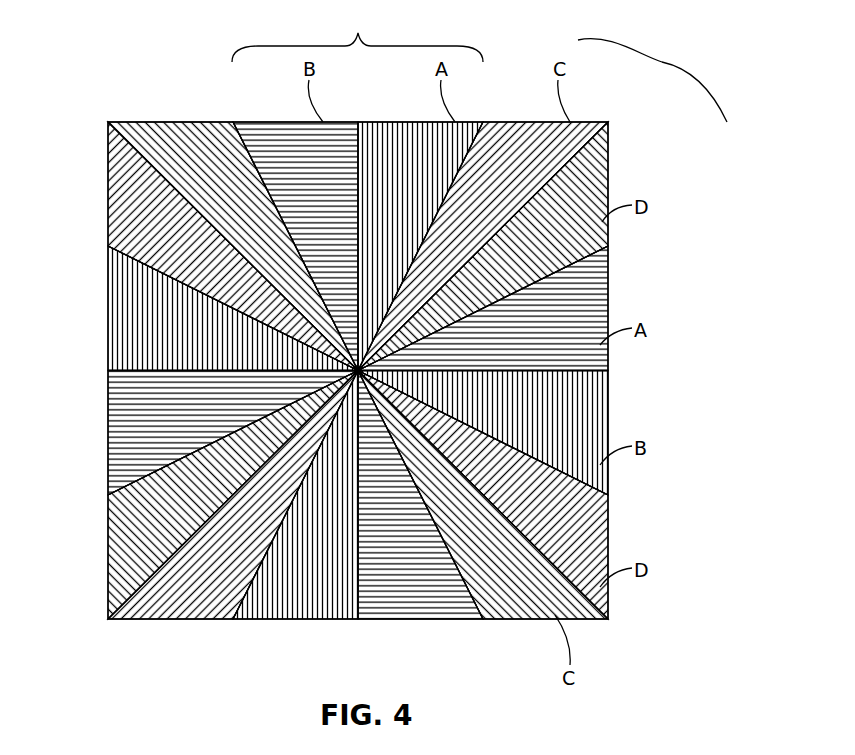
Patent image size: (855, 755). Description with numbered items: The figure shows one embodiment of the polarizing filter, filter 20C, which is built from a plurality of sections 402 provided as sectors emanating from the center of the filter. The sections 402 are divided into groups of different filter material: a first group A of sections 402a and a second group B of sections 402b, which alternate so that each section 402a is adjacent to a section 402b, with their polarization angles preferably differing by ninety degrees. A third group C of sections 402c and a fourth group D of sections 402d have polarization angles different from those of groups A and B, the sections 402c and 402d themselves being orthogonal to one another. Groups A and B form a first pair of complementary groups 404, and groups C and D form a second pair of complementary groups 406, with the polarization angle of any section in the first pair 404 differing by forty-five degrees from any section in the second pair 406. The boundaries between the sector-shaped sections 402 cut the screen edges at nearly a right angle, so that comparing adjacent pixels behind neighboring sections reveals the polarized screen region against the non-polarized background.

The section 402 is at (598, 432).
The section of group A 402a is at (435, 122).
The section of group B 402b is at (293, 122).
The section of group C 402c is at (187, 122).
The section of group D 402d is at (598, 185).
The first pair of complementary groups 404 is at (357, 33).
The second pair of complementary groups 406 is at (652, 78).
The filter 20C is at (688, 212).